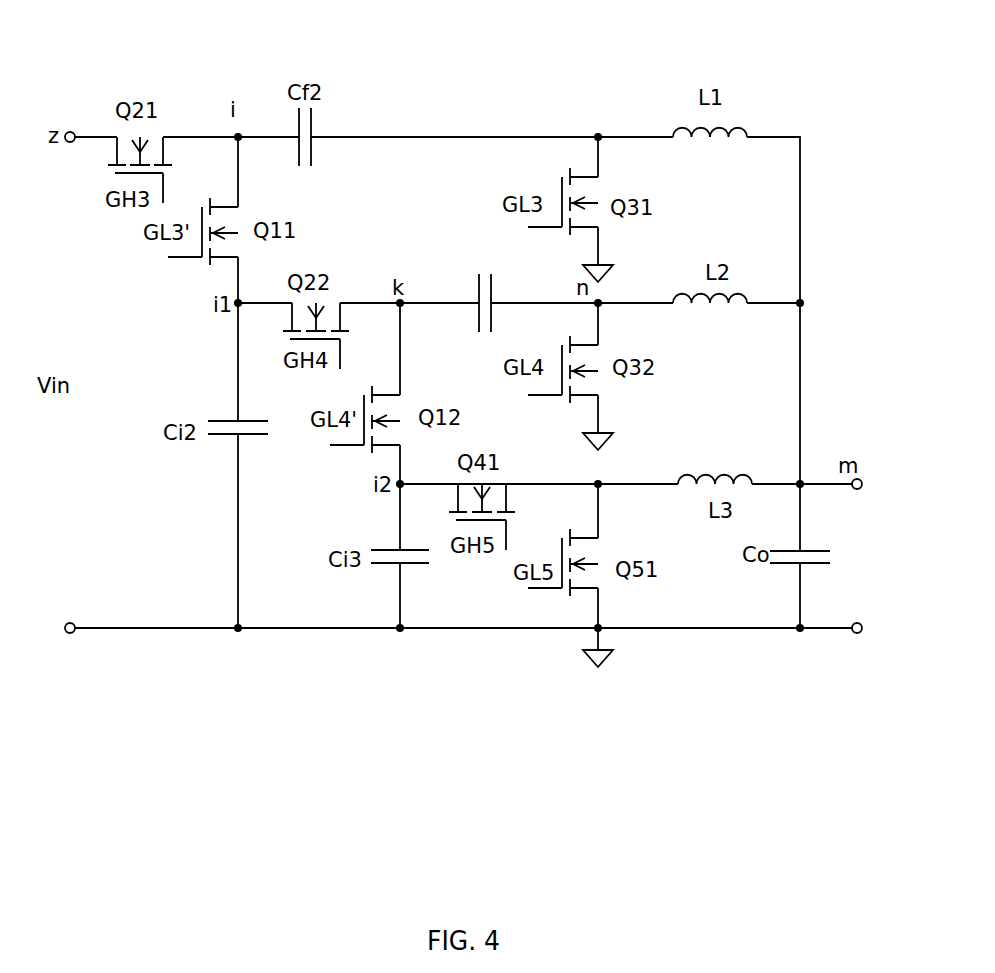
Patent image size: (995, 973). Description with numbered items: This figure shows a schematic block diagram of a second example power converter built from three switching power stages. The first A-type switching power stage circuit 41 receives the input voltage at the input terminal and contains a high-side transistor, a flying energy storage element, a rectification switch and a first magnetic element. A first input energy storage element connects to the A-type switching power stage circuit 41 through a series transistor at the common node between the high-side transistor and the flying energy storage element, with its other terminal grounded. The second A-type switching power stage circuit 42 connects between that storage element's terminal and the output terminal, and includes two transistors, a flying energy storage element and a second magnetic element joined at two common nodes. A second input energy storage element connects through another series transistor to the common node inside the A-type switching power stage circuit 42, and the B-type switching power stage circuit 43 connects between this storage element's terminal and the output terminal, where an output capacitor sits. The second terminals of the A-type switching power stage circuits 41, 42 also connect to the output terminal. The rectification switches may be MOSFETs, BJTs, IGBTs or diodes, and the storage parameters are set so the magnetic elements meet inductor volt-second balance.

The A-type switching power stage circuit 41 is at (540, 105).
The A-type switching power stage circuit 42 is at (377, 262).
The B-type switching power stage circuit 43 is at (657, 453).